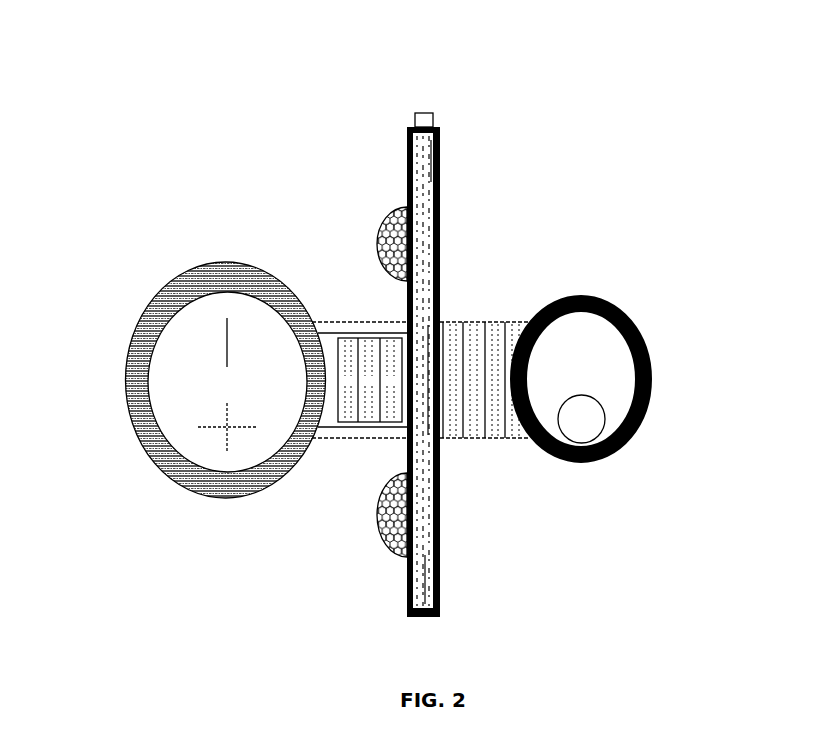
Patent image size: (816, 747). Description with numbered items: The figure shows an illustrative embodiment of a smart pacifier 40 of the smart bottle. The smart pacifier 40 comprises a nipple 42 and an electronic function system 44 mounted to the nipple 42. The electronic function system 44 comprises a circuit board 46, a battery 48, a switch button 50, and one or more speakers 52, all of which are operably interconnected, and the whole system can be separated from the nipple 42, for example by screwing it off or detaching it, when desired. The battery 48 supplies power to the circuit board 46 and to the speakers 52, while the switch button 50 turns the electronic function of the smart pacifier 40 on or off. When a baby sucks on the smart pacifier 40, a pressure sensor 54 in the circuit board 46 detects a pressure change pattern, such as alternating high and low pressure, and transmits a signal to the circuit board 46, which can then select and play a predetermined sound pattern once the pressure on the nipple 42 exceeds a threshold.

The smart pacifier 40 is at (628, 212).
The nipple 42 is at (653, 380).
The electronic function system 44 is at (247, 530).
The circuit board 46 is at (442, 220).
The battery 48 is at (125, 381).
The switch button 50 is at (425, 110).
The speaker 52 is at (384, 211).
The pressure sensor 54 is at (607, 421).